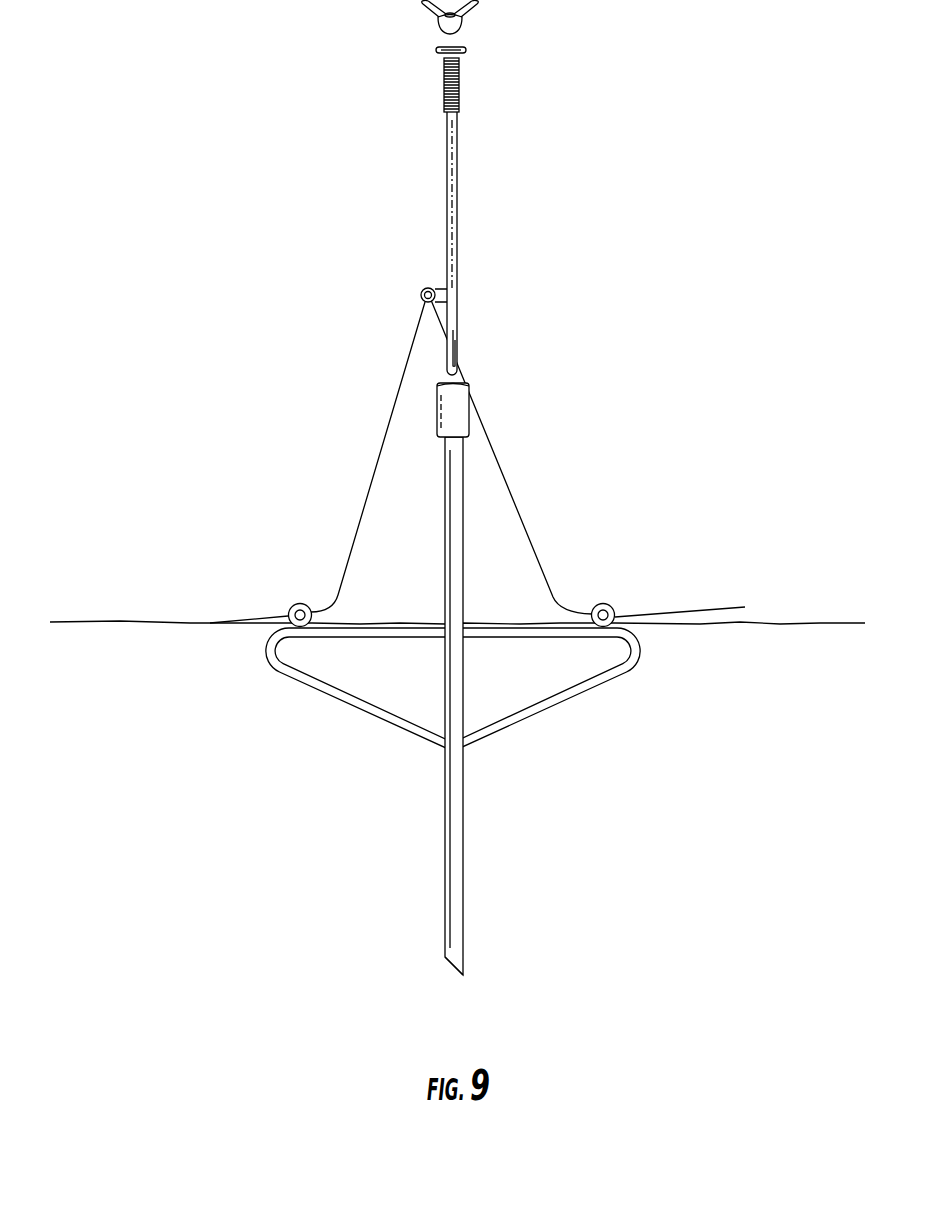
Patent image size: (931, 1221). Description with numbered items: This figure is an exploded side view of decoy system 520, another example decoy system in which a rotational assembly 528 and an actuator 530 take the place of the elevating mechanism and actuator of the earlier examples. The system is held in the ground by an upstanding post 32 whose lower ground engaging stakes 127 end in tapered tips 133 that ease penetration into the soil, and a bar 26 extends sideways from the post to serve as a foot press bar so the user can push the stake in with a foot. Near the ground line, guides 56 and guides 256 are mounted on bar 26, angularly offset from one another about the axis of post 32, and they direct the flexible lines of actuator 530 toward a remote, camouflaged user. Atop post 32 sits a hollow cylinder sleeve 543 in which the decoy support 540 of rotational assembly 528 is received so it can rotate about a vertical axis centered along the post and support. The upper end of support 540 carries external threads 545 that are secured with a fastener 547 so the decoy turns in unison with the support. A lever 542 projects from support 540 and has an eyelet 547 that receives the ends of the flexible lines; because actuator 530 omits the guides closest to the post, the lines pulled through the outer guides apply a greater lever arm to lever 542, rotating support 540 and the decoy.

The decoy system 520 is at (302, 93).
The rotational assembly 528 is at (428, 211).
The fastener / eyelet 547 is at (480, 19).
The external threads 545 is at (462, 90).
The decoy support 540 is at (462, 290).
The lever 542 is at (421, 297).
The hollow cylinder sleeve 543 is at (437, 422).
The actuator 530 is at (583, 603).
The guides 256 is at (300, 603).
The guides 56 is at (608, 606).
The upstanding post 32 is at (442, 543).
The bar 26 is at (492, 630).
The ground engaging stakes 127 is at (462, 858).
The tapered tips 133 is at (455, 972).